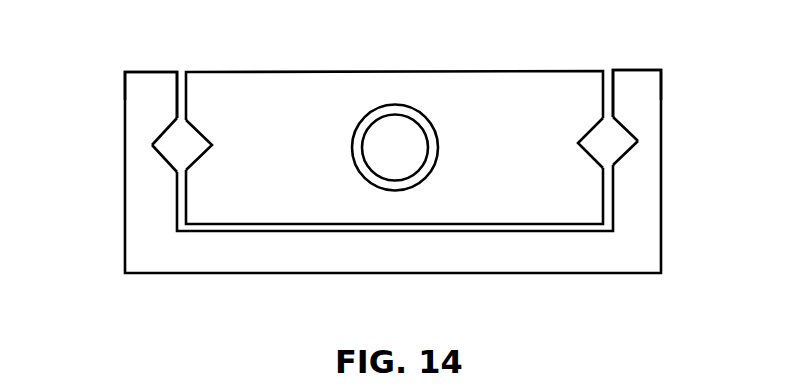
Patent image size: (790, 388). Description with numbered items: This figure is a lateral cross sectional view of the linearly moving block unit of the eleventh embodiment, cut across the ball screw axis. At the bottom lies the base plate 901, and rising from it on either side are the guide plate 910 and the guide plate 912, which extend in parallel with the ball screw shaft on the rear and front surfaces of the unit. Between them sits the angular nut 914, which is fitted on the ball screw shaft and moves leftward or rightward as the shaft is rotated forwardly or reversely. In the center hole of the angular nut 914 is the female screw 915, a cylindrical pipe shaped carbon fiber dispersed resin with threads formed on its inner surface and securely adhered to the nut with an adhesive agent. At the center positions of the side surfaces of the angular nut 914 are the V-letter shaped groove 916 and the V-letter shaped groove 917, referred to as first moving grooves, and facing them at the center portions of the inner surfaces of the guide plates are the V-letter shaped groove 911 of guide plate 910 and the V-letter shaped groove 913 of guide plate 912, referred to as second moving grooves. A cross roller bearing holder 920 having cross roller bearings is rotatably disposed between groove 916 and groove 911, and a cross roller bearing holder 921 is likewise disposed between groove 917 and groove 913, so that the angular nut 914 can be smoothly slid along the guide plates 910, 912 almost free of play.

The base plate 901 is at (275, 260).
The guide plate 910 is at (155, 83).
The V-letter shaped groove 911 is at (162, 158).
The guide plate 912 is at (634, 82).
The V-letter shaped groove 913 is at (627, 155).
The angular nut 914 is at (300, 83).
The female screw 915 is at (407, 108).
The V-letter shaped groove 916 is at (200, 132).
The V-letter shaped groove 917 is at (593, 127).
The cross roller bearing holder 920 is at (170, 139).
The cross roller bearing holder 921 is at (622, 132).